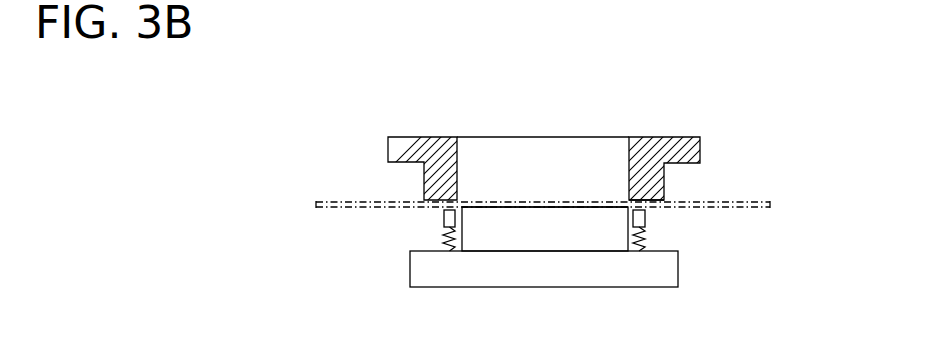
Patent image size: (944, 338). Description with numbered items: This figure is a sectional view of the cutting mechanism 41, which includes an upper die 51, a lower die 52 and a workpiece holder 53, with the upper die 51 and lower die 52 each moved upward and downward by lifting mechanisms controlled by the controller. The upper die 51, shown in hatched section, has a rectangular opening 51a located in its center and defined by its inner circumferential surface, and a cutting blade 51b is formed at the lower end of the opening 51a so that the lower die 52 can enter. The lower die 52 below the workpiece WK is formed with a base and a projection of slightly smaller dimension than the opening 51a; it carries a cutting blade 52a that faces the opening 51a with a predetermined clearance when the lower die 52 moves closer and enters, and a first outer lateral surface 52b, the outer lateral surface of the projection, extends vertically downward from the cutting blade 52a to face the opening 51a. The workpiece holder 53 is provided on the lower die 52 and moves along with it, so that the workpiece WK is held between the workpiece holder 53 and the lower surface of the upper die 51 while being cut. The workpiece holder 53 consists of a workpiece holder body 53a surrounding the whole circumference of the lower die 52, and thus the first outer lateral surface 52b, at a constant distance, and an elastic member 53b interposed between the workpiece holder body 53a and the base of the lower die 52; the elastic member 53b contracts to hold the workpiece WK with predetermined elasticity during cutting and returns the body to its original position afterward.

The workpiece WK is at (332, 200).
The cutting mechanism 41 is at (745, 122).
The upper die 51 is at (673, 137).
The opening 51a is at (622, 137).
The cutting blade 51b is at (628, 200).
The lower die 52 is at (678, 272).
The cutting blade 52a is at (628, 205).
The first outer lateral surface 52b is at (632, 250).
The workpiece holder 53 is at (670, 231).
The workpiece holder body 53a is at (443, 216).
The elastic member 53b is at (444, 240).